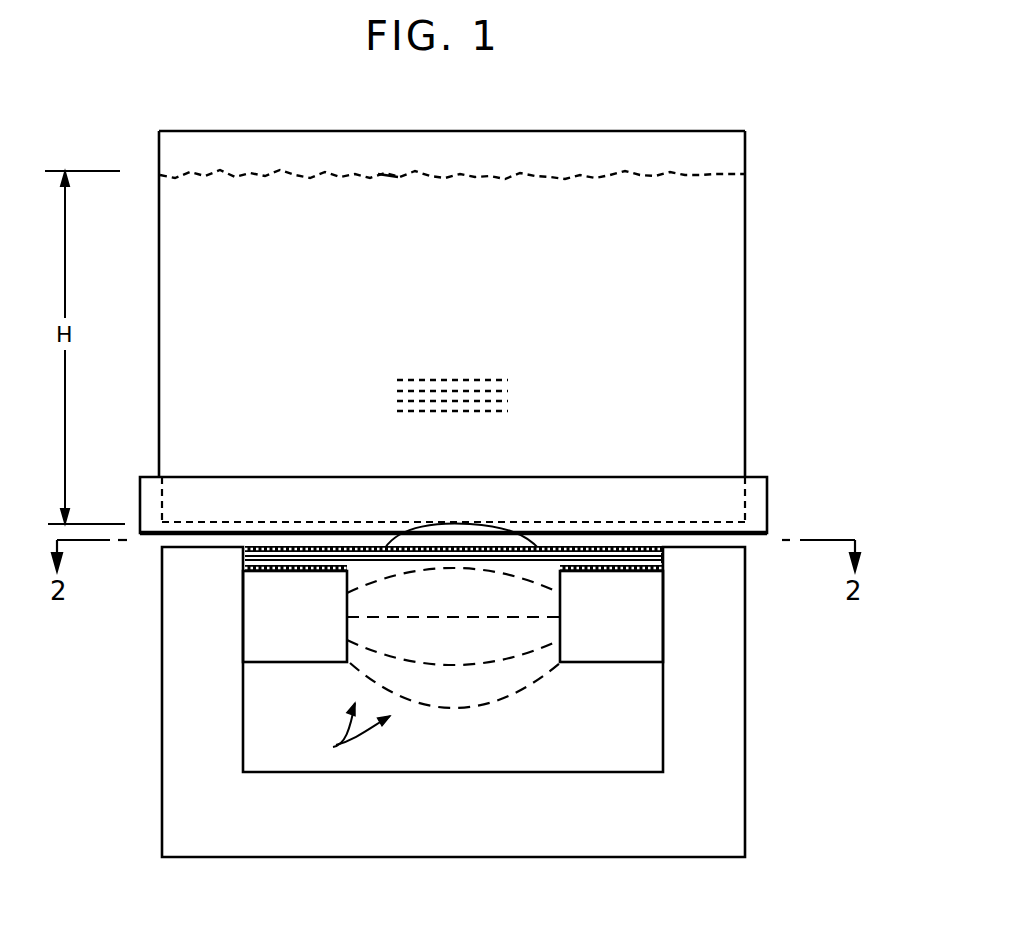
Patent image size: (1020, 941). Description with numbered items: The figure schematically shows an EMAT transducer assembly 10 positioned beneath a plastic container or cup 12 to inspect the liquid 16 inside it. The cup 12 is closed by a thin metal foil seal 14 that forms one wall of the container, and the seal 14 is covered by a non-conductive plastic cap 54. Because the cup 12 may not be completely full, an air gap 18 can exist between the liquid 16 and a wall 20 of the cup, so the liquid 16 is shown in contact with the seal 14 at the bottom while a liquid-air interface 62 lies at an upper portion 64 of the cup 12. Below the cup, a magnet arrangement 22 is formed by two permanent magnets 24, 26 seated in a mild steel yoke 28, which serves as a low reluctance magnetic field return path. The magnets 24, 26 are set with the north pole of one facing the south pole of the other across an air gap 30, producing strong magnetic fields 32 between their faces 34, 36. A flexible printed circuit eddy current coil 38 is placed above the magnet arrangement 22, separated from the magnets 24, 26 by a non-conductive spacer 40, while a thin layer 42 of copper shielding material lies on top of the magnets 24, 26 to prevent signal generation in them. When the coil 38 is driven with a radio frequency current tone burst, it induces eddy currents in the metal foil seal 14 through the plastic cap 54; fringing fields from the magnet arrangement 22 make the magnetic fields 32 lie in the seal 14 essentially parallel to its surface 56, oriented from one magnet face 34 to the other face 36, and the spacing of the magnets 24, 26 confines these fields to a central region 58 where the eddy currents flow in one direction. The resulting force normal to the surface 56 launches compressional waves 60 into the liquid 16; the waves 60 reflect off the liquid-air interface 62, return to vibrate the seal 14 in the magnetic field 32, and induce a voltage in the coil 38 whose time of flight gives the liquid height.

The EMAT transducer assembly 10 is at (522, 724).
The plastic container or cup 12 is at (735, 378).
The metal foil seal 14 is at (600, 522).
The liquid 16 is at (570, 257).
The air gap 18 is at (470, 162).
The wall of the plastic cup 20 is at (437, 131).
The magnet arrangement 22 is at (344, 733).
The permanent magnet 24 is at (290, 635).
The permanent magnet 26 is at (607, 640).
The mild steel yoke 28 is at (545, 845).
The air gap 30 is at (476, 598).
The magnetic fields 32 is at (505, 698).
The magnet face 34 is at (347, 627).
The magnet face 36 is at (560, 630).
The eddy current coil 38 is at (663, 547).
The non-conductive spacer 40 is at (378, 557).
The layer of copper shielding material 42 is at (282, 574).
The non-conductive plastic cap 54 is at (767, 505).
The surface of the metal foil seal 56 is at (315, 522).
The central region of the metal foil seal 58 is at (458, 512).
The compressional waves 60 is at (458, 373).
The liquid-air interface 62 is at (386, 178).
The upper portion of the plastic container 64 is at (670, 157).